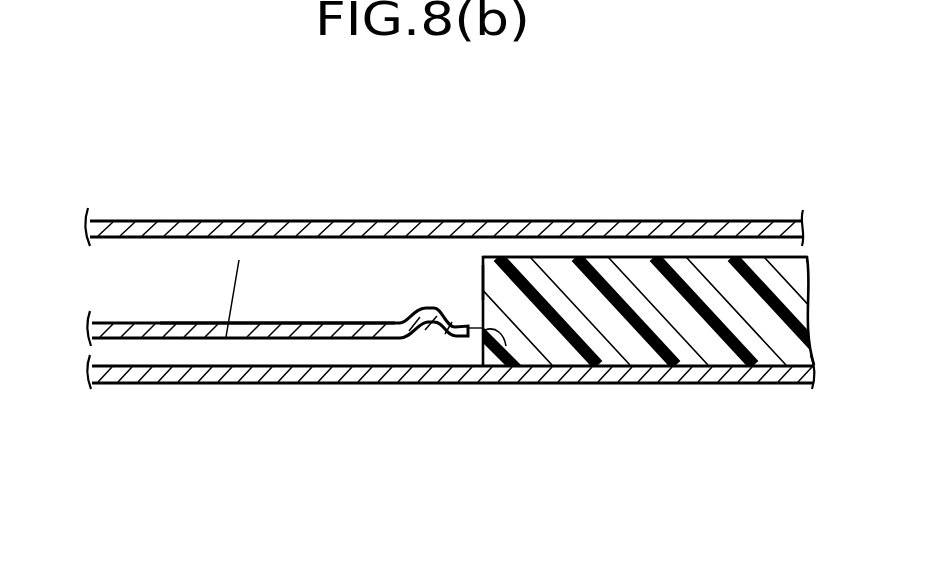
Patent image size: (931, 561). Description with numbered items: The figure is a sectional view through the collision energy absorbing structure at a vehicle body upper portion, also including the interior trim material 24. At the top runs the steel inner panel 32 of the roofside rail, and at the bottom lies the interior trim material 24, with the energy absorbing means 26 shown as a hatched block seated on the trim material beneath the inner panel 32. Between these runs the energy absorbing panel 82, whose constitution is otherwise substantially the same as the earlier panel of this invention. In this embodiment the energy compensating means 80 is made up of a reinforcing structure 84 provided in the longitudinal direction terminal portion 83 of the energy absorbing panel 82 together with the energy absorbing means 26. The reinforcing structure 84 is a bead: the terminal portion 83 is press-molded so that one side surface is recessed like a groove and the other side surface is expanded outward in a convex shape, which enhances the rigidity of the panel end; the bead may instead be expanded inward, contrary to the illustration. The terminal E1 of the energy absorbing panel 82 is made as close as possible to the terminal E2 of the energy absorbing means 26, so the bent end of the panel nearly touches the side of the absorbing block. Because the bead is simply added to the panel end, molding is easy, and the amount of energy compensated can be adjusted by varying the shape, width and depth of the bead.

The inner panel 32 is at (282, 228).
The interior trim material 24 is at (671, 385).
The energy absorbing means 26 is at (680, 282).
The energy compensating means 80 is at (506, 257).
The energy absorbing panel 82 is at (277, 379).
The longitudinal direction terminal portion 83 is at (334, 340).
The reinforcing structure 84 is at (428, 332).
The terminal of the energy absorbing panel E1 is at (506, 348).
The terminal of the energy absorbing means E2 is at (482, 280).